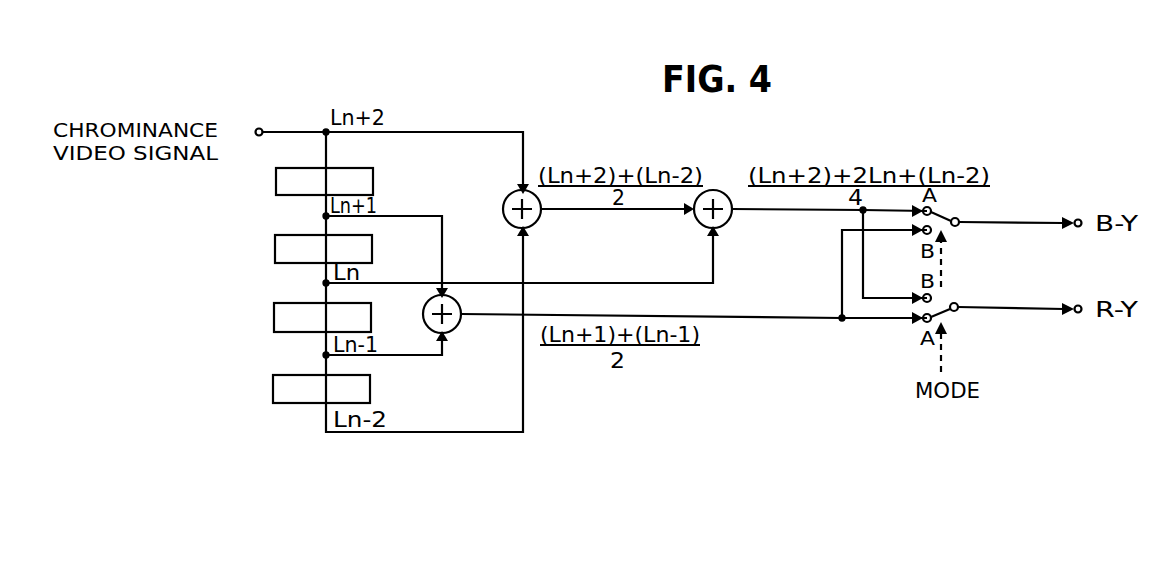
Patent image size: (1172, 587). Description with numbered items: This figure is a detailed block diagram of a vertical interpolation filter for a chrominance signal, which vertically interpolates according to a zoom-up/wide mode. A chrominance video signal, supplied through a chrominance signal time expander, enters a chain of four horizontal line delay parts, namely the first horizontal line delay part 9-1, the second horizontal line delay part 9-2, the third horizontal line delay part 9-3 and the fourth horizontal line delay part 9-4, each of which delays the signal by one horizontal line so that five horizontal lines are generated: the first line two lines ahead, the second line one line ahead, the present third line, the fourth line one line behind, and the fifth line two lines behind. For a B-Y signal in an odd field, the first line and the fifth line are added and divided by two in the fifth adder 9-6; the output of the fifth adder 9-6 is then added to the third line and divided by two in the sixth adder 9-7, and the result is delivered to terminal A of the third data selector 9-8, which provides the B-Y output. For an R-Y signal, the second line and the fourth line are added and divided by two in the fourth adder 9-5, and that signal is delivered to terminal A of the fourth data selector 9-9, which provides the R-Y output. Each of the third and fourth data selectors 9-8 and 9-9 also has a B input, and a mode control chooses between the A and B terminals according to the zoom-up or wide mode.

The first horizontal line delay part 9-1 is at (356, 168).
The second horizontal line delay part 9-2 is at (372, 249).
The third horizontal line delay part 9-3 is at (371, 318).
The fourth horizontal line delay part 9-4 is at (371, 389).
The fourth adder 9-5 is at (457, 299).
The fifth adder 9-6 is at (528, 188).
The sixth adder 9-7 is at (722, 188).
The third data selector 9-8 is at (960, 216).
The fourth data selector 9-9 is at (957, 302).